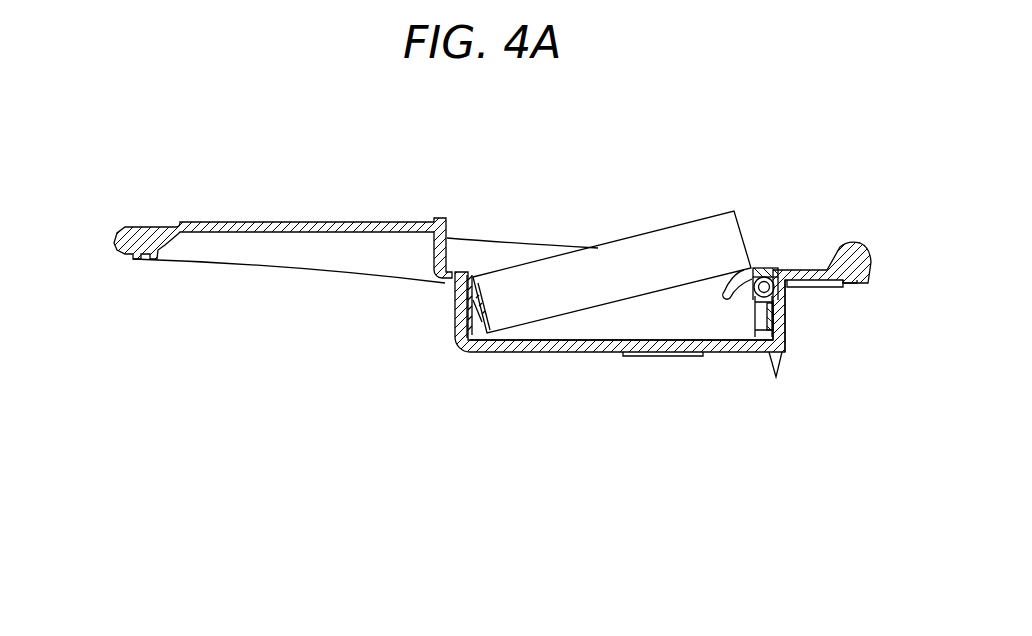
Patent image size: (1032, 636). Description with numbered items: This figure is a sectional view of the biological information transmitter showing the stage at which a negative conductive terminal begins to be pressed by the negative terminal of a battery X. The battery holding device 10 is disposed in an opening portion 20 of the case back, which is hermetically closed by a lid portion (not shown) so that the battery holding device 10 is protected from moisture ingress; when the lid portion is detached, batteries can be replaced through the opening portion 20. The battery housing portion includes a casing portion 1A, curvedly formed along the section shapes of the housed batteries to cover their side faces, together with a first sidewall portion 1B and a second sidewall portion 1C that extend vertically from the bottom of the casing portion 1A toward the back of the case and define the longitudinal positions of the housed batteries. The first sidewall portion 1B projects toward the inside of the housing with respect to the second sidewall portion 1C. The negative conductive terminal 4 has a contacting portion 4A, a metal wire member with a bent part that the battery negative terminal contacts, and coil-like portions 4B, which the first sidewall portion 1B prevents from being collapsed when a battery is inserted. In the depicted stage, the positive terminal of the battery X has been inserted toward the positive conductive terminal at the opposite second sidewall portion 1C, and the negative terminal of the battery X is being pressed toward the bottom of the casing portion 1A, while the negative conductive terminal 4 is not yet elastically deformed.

The opening portion 20 is at (443, 221).
The battery X is at (547, 262).
The battery holding device 10 is at (541, 358).
The casing portion 1A is at (737, 354).
The first sidewall portion 1B is at (784, 297).
The second sidewall portion 1C is at (458, 303).
The negative conductive terminal 4 is at (790, 161).
The contacting portion 4A is at (725, 282).
The coil-like portion 4B is at (764, 272).